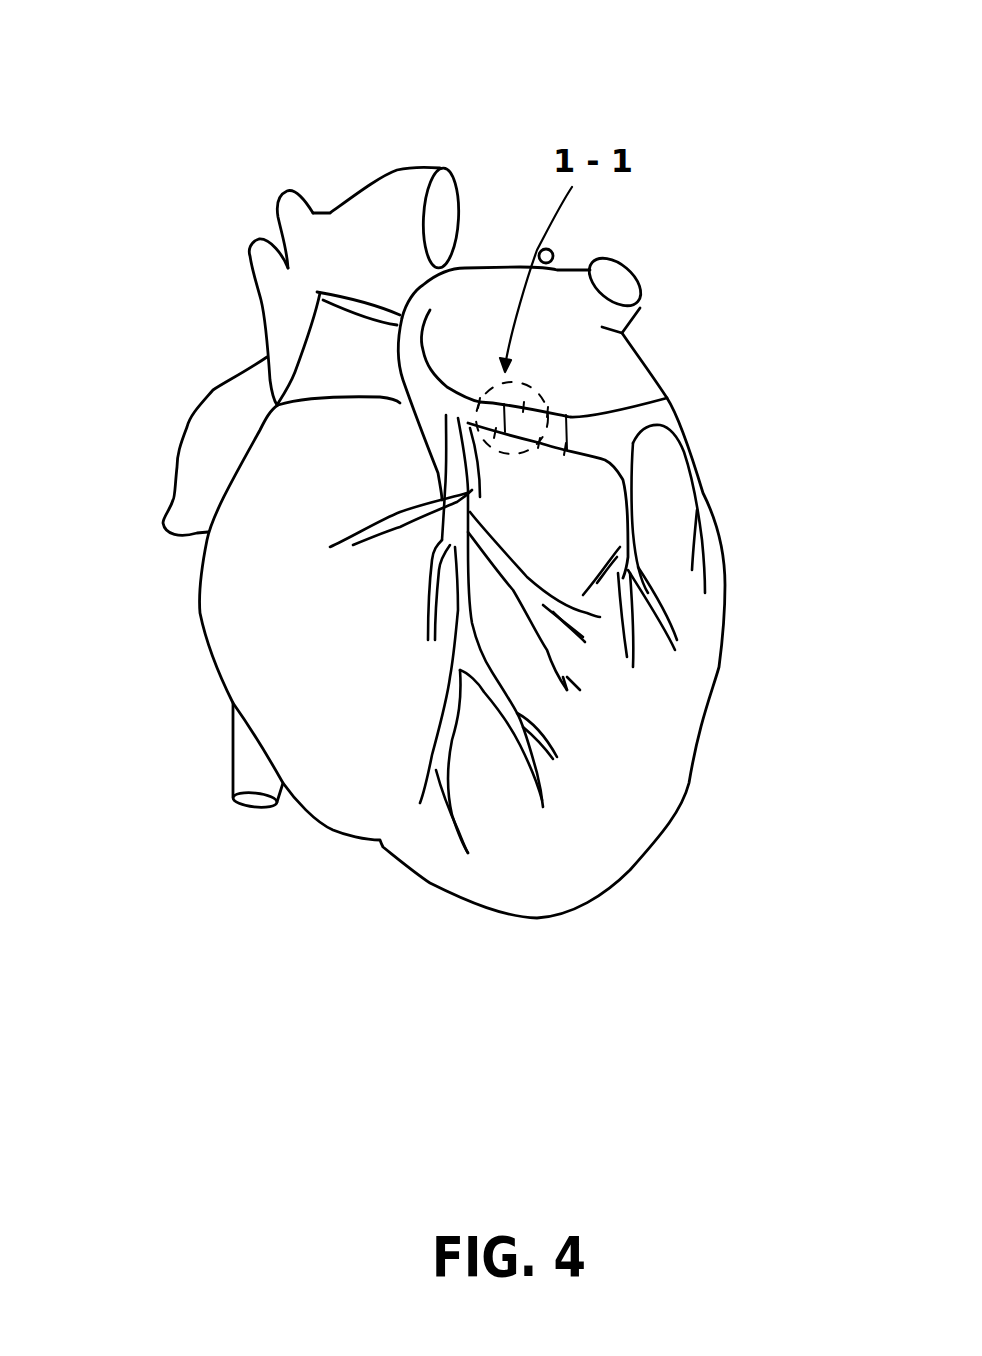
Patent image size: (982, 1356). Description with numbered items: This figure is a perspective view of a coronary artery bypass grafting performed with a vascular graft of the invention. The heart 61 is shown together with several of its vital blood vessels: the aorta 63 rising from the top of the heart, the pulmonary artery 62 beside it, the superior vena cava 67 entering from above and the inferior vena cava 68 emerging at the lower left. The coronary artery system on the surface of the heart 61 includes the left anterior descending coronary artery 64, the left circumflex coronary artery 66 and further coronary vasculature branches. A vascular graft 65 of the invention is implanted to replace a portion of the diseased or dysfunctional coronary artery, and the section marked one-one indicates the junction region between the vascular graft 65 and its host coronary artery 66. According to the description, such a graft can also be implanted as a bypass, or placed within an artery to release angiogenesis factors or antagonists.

The heart 61 is at (492, 238).
The pulmonary artery 62 is at (622, 253).
The aorta 63 is at (445, 182).
The left anterior descending coronary artery 64 is at (278, 405).
The vascular graft 65 is at (580, 410).
The left circumflex coronary artery 66 is at (547, 457).
The superior vena cava 67 is at (333, 293).
The inferior vena cava 68 is at (240, 817).